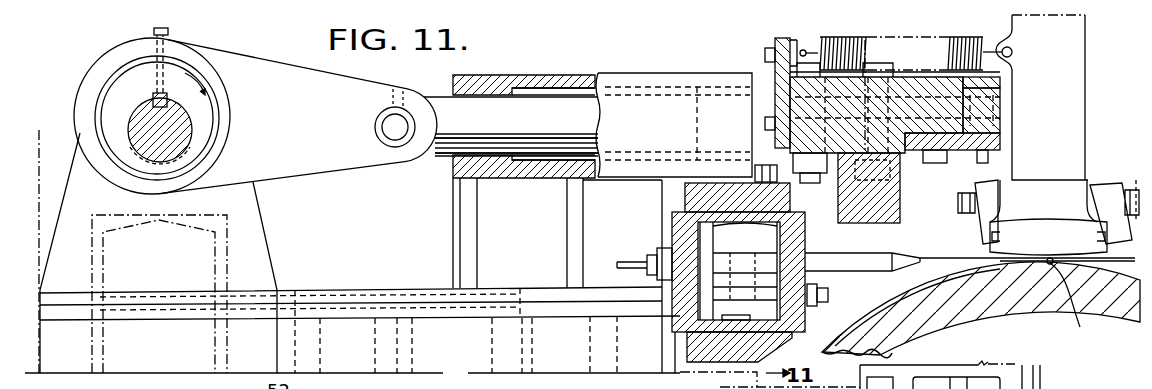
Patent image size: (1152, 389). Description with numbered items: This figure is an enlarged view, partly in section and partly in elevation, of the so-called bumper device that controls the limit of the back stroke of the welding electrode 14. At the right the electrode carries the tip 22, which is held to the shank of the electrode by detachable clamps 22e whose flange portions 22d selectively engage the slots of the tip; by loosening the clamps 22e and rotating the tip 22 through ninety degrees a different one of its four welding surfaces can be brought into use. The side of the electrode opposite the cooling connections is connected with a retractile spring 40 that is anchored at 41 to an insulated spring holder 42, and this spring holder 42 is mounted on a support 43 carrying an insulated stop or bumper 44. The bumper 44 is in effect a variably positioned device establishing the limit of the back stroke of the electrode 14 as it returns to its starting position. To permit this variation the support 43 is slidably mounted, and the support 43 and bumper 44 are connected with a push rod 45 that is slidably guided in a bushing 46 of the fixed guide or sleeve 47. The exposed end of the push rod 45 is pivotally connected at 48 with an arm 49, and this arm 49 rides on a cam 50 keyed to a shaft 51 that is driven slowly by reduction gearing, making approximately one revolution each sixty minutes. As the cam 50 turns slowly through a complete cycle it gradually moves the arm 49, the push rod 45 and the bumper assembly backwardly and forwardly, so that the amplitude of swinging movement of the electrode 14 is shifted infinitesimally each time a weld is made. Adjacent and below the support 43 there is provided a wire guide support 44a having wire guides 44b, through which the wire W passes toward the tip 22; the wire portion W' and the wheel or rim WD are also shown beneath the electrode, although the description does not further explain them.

The electrode 14 is at (1067, 64).
The tip 22 is at (1081, 236).
The flange portions 22d is at (985, 237).
The detachable clamps 22e is at (1100, 192).
The retractile spring 40 is at (957, 33).
The spring anchor 41 is at (797, 50).
The insulated spring holder 42 is at (775, 68).
The support 43 is at (908, 120).
The insulated stop or bumper 44 is at (1007, 110).
The wire guide support 44a is at (692, 233).
The wire guides 44b is at (843, 267).
The push rod 45 is at (511, 126).
The bushing 46 is at (480, 153).
The fixed guide or sleeve 47 is at (863, 215).
The pivotal connection 48 is at (393, 127).
The arm 49 is at (255, 116).
The cam 50 is at (157, 118).
The shaft 51 is at (158, 130).
The wire W is at (1027, 272).
The wire end W' is at (1072, 301).
The wheel rim WD is at (981, 310).